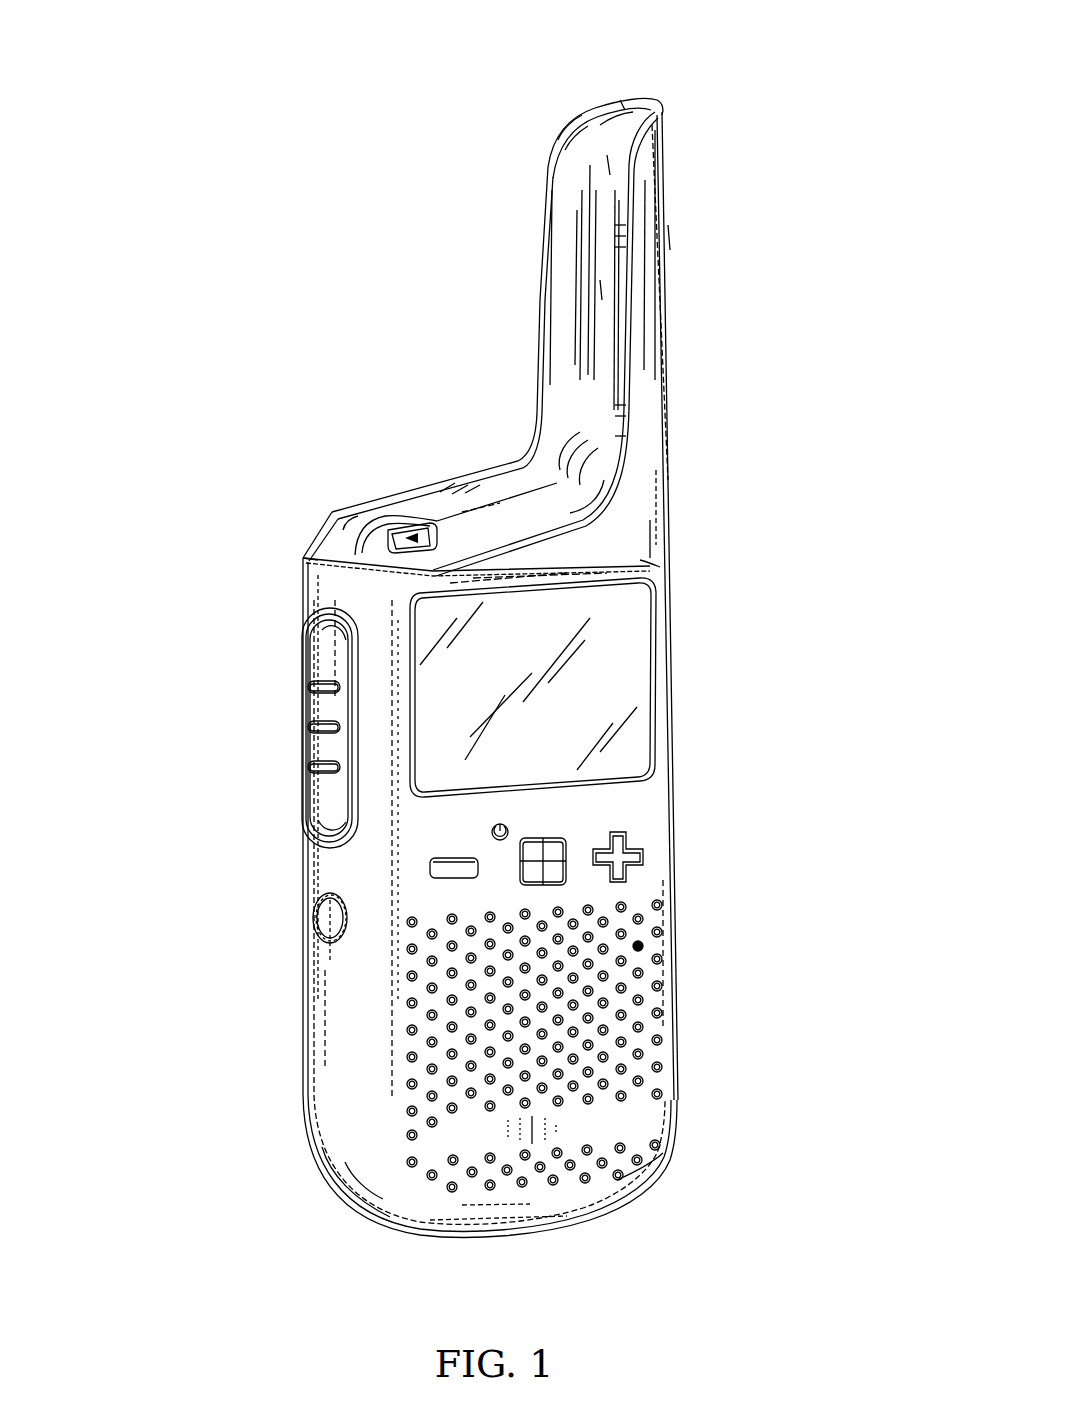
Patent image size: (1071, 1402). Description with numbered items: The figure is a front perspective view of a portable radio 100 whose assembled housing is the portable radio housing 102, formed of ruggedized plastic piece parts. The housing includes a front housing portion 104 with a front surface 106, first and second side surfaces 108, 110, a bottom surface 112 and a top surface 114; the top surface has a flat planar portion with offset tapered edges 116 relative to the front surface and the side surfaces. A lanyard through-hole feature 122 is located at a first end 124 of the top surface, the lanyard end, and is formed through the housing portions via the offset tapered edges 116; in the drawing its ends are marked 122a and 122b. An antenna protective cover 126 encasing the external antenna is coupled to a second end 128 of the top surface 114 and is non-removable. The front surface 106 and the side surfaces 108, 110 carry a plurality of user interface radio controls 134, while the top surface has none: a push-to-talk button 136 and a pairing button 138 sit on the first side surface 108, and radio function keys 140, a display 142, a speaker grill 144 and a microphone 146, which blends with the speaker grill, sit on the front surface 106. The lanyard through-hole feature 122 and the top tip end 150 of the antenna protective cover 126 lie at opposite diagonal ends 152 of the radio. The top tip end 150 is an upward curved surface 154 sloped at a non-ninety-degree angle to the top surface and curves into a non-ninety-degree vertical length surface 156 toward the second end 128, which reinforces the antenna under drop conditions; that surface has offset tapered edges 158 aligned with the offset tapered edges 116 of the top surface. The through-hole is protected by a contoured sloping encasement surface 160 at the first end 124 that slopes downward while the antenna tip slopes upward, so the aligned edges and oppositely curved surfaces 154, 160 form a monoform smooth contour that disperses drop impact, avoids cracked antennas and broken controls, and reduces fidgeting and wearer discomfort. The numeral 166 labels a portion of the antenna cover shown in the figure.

The portable radio 100 is at (116, 79).
The portable radio housing 102 is at (798, 480).
The front housing portion 104 is at (681, 842).
The front surface 106 is at (645, 565).
The first side surface 108 is at (335, 1000).
The second side surface 110 is at (676, 1100).
The bottom surface 112 is at (499, 1240).
The top surface 114 is at (520, 437).
The offset tapered edges 116 is at (545, 505).
The lanyard through-hole feature 122 is at (437, 536).
The first corner 122a is at (305, 557).
The second corner 122b is at (343, 530).
The first end 124 is at (345, 538).
The antenna protective cover 126 is at (607, 163).
The second end 128 is at (537, 418).
The user interface radio controls 134 is at (318, 730).
The push-to-talk button 136 is at (318, 697).
The pairing button 138 is at (318, 918).
The radio function keys 140 is at (462, 857).
The display 142 is at (635, 668).
The speaker grill 144 is at (545, 1007).
The microphone 146 is at (645, 946).
The top tip end 150 is at (628, 100).
The opposite diagonal ends 152 is at (500, 87).
The upward curved surface 154 is at (597, 26).
The non-90 degree vertical length surface 156 is at (527, 412).
The offset tapered edges 158 is at (604, 290).
The contoured sloping encasement surface 160 is at (90, 552).
The antenna rear surface 166 is at (672, 237).